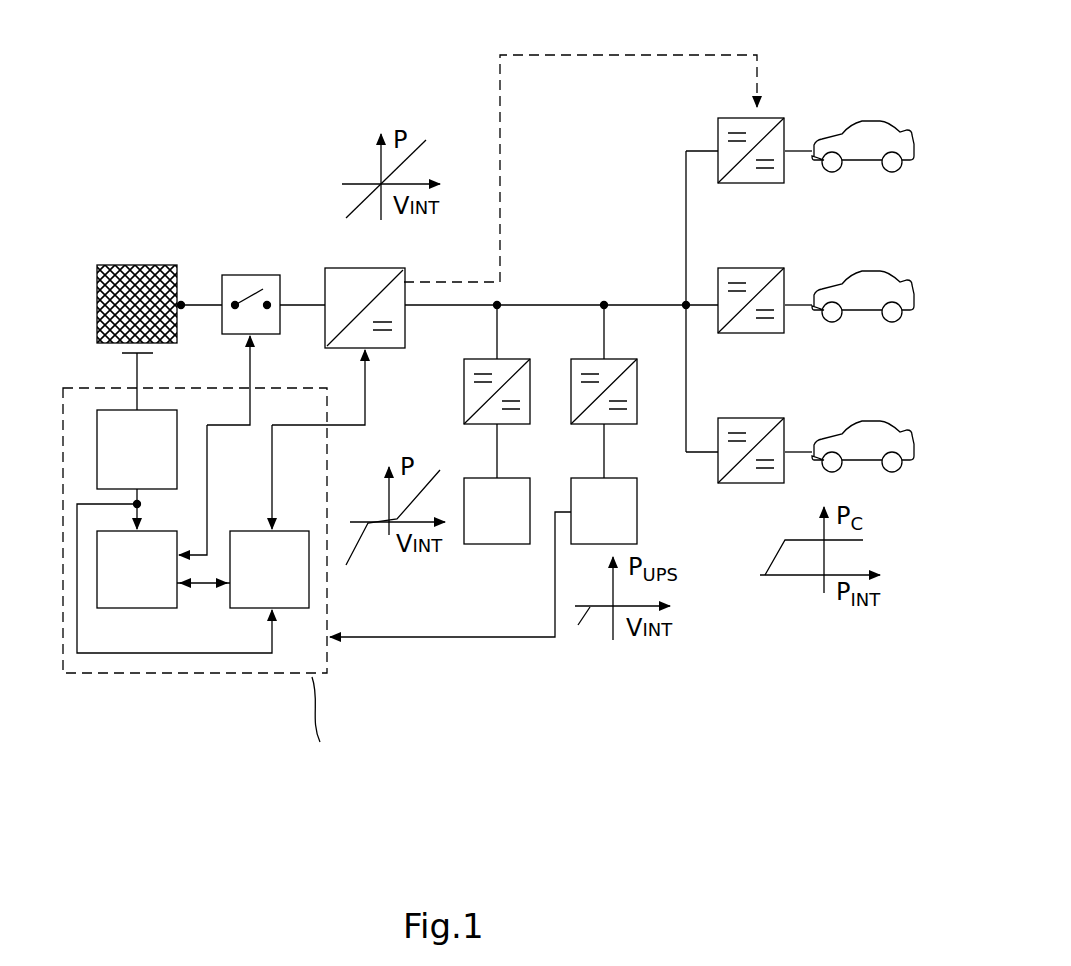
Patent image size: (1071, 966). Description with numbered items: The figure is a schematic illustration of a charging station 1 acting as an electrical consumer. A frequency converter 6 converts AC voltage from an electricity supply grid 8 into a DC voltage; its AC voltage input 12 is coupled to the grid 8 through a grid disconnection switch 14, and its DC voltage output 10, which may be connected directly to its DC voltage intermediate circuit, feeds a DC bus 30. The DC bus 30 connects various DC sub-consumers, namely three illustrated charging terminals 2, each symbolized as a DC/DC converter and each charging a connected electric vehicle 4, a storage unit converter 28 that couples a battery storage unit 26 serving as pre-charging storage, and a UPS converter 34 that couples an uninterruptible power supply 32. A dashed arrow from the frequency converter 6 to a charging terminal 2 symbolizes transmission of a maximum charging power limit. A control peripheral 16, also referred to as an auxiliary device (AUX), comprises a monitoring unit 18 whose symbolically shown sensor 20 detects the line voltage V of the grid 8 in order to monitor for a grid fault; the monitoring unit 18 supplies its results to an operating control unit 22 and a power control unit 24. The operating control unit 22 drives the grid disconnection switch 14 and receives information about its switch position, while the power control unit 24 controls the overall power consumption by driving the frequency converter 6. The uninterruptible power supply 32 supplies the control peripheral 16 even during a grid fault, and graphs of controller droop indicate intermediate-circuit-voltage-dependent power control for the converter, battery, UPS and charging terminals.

The charging station 1 is at (178, 100).
The charging terminal 2 is at (792, 125).
The electric vehicle 4 is at (895, 117).
The frequency converter 6 is at (338, 266).
The electricity supply grid 8 is at (137, 262).
The DC voltage output 10 is at (416, 330).
The AC voltage input 12 is at (316, 293).
The grid disconnection switch 14 is at (238, 287).
The control peripheral 16 is at (240, 676).
The monitoring unit 18 is at (105, 455).
The sensor 20 is at (137, 374).
The operating control unit 22 is at (105, 588).
The power control unit 24 is at (242, 600).
The battery storage unit 26 is at (500, 546).
The storage unit converter 28 is at (464, 416).
The DC bus 30 is at (540, 303).
The uninterruptible power supply 32 is at (637, 505).
The UPS converter 34 is at (637, 417).